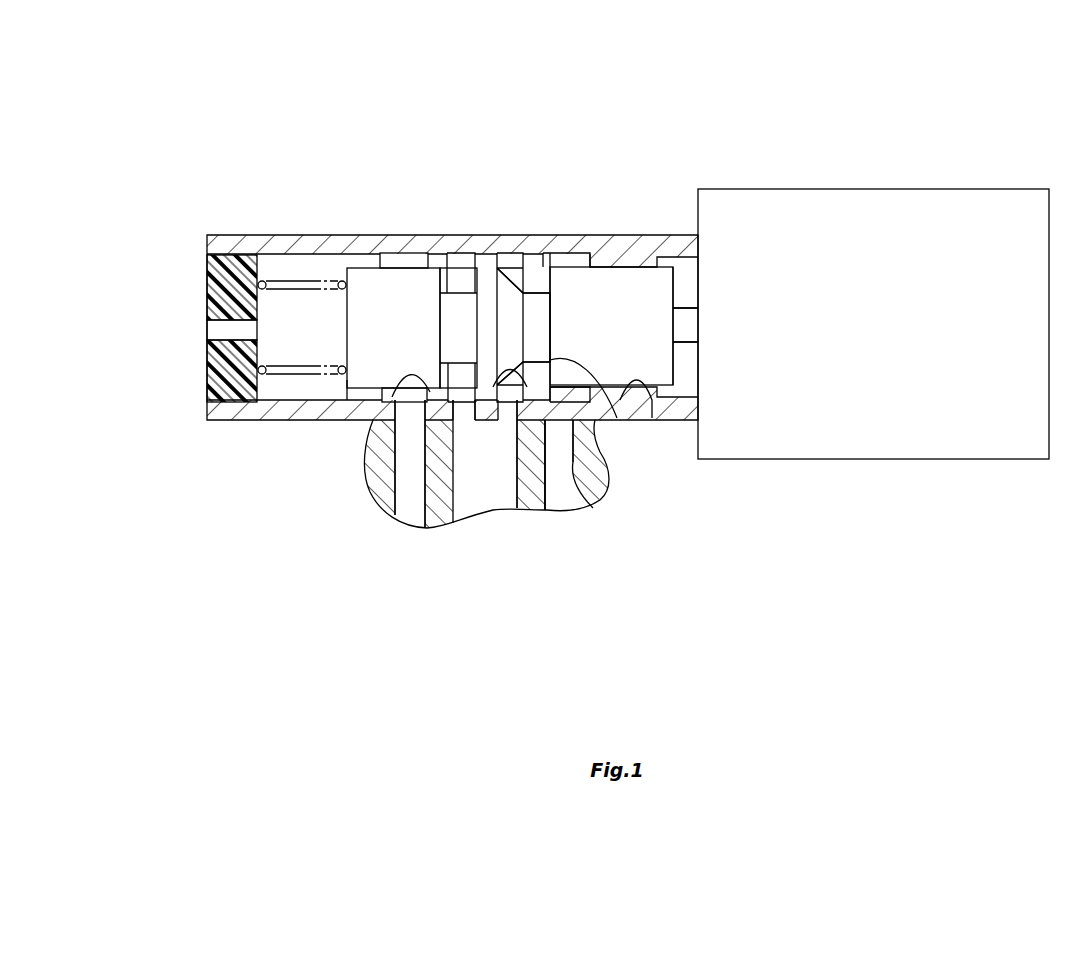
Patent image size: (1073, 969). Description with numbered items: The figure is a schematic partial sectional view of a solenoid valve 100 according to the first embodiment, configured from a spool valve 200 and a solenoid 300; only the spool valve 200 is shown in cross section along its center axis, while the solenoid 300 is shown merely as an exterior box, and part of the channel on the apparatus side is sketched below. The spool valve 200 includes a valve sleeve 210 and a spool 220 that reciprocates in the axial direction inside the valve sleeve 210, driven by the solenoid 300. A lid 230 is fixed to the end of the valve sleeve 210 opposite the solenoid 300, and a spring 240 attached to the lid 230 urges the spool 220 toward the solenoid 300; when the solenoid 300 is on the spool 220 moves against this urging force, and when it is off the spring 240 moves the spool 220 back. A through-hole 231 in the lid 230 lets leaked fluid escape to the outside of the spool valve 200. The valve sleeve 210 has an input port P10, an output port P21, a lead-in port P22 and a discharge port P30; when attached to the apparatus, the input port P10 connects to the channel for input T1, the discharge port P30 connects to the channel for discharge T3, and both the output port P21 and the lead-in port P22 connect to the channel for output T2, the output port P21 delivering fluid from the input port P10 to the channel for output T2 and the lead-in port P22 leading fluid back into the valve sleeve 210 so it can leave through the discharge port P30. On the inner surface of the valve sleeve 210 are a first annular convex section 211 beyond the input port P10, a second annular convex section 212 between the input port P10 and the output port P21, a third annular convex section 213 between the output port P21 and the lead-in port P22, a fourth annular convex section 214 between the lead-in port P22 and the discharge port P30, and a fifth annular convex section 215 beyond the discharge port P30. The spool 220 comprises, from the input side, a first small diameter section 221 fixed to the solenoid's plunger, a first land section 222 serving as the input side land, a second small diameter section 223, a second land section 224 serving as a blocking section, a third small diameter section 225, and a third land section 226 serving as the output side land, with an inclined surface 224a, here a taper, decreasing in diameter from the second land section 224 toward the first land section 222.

The solenoid valve 100 is at (912, 116).
The spool valve 200 is at (409, 198).
The valve sleeve 210 is at (613, 227).
The first annular convex section 211 is at (652, 420).
The second annular convex section 212 is at (572, 420).
The third annular convex section 213 is at (530, 503).
The fourth annular convex section 214 is at (392, 397).
The fifth annular convex section 215 is at (355, 378).
The spool 220 is at (687, 364).
The first small diameter section 221 is at (687, 306).
The first land section 222 is at (578, 278).
The second small diameter section 223 is at (538, 292).
The second land section 224 is at (488, 283).
The inclined surface 224a is at (514, 290).
The third small diameter section 225 is at (461, 303).
The third land section 226 is at (403, 272).
The lid 230 is at (208, 283).
The through-hole 231 is at (230, 322).
The spring 240 is at (293, 283).
The solenoid 300 is at (950, 200).
The channel for input T1 is at (553, 420).
The channel for output T2 is at (513, 508).
The channel for discharge T3 is at (403, 515).
The input port P10 is at (560, 505).
The output port P21 is at (493, 390).
The lead-in port P22 is at (467, 420).
The discharge port P30 is at (410, 418).